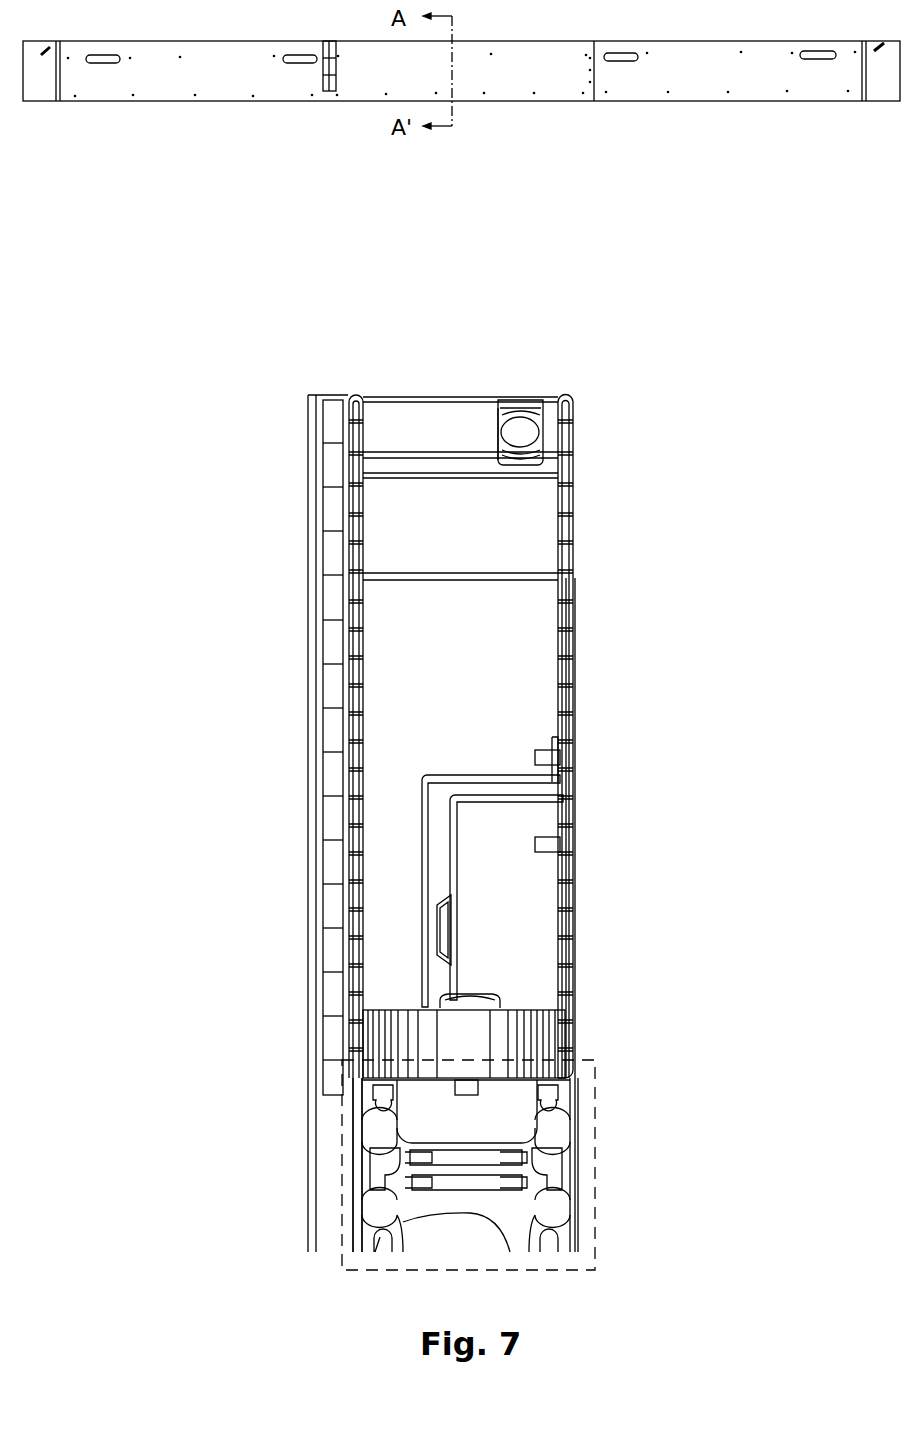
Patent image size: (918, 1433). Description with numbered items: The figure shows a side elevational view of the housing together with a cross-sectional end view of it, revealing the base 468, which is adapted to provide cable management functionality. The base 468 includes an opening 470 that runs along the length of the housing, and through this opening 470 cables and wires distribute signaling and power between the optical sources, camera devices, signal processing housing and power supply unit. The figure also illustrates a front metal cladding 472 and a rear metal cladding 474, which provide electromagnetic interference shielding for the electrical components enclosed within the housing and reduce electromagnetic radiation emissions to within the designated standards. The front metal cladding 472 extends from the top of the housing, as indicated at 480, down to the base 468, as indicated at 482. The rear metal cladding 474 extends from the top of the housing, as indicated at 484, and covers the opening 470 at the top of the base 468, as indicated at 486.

The base 468 is at (597, 1180).
The opening 470 is at (482, 1126).
The front metal cladding 472 is at (340, 513).
The rear metal cladding 474 is at (584, 510).
The top of housing at front metal cladding 480 is at (356, 396).
The base end of front metal cladding 482 is at (358, 1188).
The top of housing at rear metal cladding 484 is at (566, 395).
The rear metal cladding covering the opening 486 is at (468, 1078).